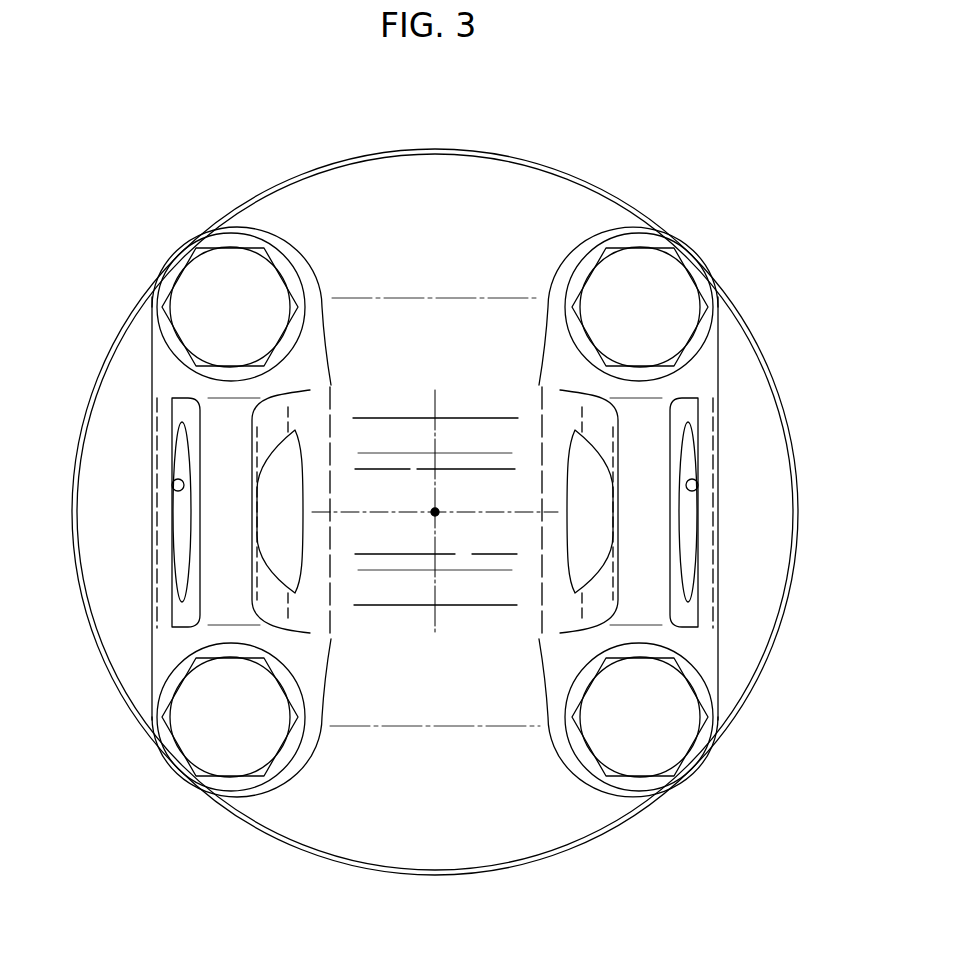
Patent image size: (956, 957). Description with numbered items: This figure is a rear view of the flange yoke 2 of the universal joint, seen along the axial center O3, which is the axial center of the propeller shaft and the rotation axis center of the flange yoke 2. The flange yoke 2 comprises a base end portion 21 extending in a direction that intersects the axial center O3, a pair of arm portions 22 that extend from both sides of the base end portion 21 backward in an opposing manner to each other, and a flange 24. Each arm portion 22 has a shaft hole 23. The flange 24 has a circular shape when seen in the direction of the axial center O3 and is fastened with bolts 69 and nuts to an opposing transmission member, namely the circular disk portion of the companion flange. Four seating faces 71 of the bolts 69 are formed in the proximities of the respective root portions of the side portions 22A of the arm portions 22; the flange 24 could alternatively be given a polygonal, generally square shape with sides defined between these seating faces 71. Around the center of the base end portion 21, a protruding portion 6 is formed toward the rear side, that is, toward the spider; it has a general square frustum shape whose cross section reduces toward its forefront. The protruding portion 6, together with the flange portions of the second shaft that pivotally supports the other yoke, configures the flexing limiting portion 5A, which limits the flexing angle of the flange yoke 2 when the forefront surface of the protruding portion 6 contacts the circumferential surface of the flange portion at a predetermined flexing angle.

The flange yoke 2 is at (568, 168).
The flexing limiting portion 5A is at (457, 403).
The protruding portion 6 is at (395, 492).
The base end portion 21 is at (490, 403).
The arm portions 22 is at (223, 542).
The side portions 22A is at (223, 390).
The shaft hole 23 is at (175, 478).
The flange 24 is at (478, 797).
The bolts 69 is at (207, 290).
The seating faces 71 is at (173, 338).
The axial center O3 is at (435, 500).